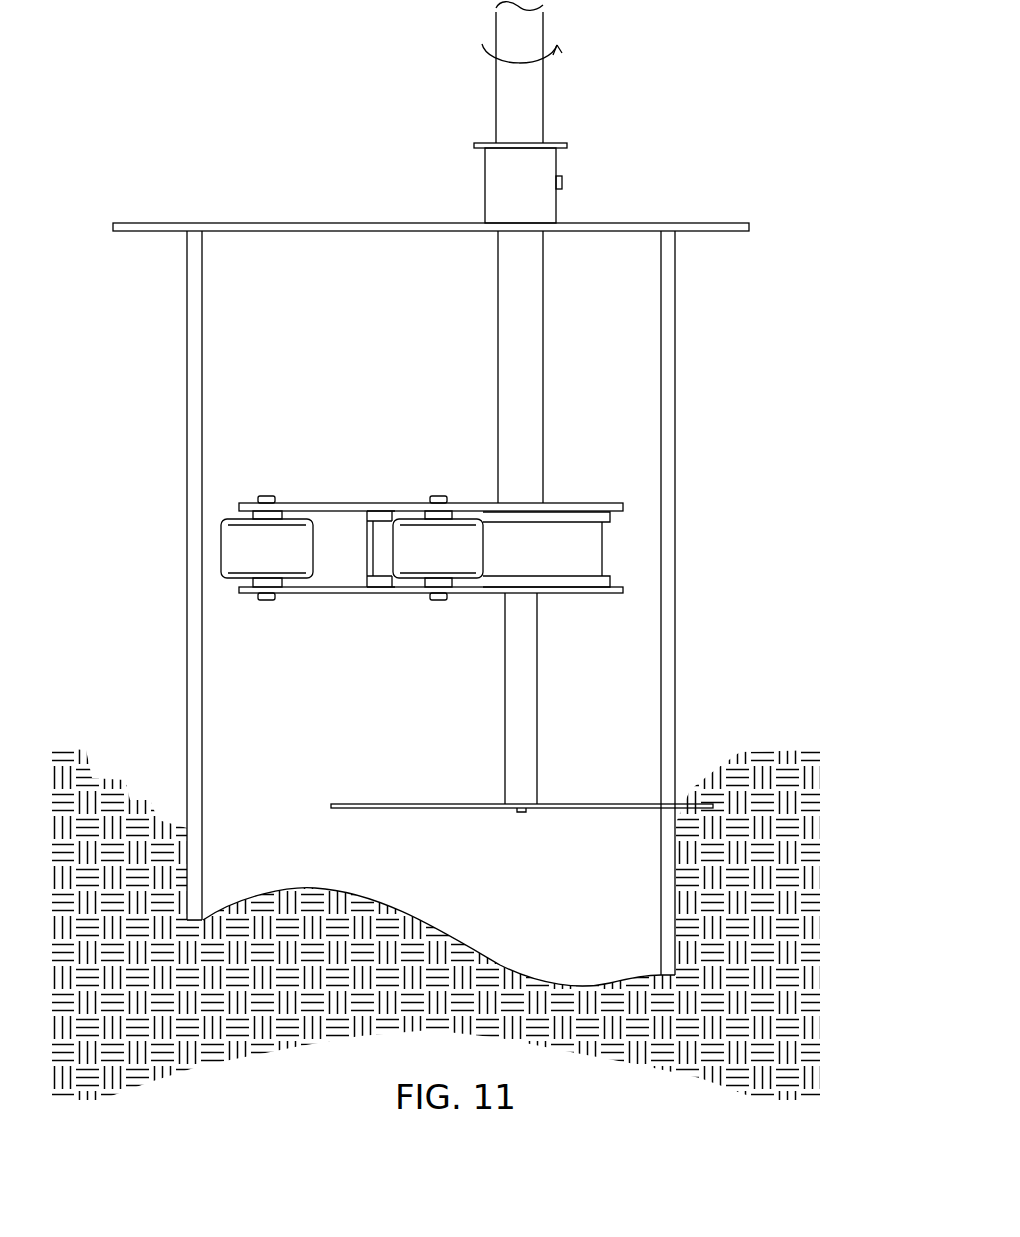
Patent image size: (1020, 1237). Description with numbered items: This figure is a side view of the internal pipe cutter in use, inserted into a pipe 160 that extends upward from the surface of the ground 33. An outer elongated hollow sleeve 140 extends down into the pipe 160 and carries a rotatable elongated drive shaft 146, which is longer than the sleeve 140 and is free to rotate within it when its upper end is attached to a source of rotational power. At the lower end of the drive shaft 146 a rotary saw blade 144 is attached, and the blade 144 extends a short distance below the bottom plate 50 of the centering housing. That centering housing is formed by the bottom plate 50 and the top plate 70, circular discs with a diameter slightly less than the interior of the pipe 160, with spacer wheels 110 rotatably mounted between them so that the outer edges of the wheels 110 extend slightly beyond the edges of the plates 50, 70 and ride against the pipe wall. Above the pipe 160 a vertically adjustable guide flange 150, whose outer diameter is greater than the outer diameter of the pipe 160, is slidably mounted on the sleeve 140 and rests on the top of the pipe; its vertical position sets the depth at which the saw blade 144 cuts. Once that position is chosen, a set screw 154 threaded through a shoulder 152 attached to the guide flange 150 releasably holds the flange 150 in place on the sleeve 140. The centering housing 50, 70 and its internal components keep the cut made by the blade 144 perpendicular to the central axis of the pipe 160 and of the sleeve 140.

The ground 33 is at (88, 762).
The bottom plate 50 is at (341, 595).
The top plate 70 is at (324, 503).
The spacer wheels 110 is at (237, 545).
The hollow sleeve 140 is at (530, 370).
The rotary saw blade 144 is at (572, 810).
The drive shaft 146 is at (531, 701).
The guide flange 150 is at (704, 221).
The shoulder 152 is at (488, 185).
The set screw 154 is at (563, 182).
The pipe 160 is at (672, 468).